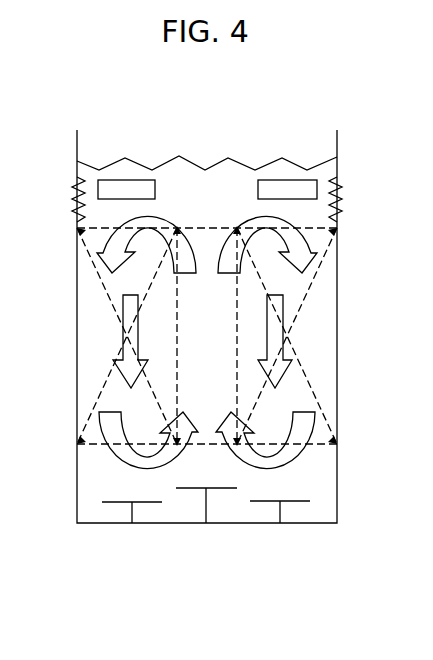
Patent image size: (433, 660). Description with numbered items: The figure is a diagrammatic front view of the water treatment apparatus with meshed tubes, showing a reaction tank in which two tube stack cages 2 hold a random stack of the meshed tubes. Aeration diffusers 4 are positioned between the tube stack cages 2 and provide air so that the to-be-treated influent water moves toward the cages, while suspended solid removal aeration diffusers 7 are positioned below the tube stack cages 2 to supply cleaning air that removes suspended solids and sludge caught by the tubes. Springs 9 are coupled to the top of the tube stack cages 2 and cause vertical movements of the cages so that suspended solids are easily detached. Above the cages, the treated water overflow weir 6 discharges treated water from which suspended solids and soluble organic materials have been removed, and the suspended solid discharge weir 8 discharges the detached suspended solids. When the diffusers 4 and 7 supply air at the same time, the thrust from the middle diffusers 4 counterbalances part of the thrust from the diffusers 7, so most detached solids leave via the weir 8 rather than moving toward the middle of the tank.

The tube stack cage 2 is at (207, 341).
The aeration diffuser 4 is at (218, 488).
The treated water overflow weir 6 is at (207, 150).
The suspended solid removal aeration diffuser 7 is at (288, 501).
The suspended solid discharge weir 8 is at (207, 196).
The spring 9 is at (207, 199).